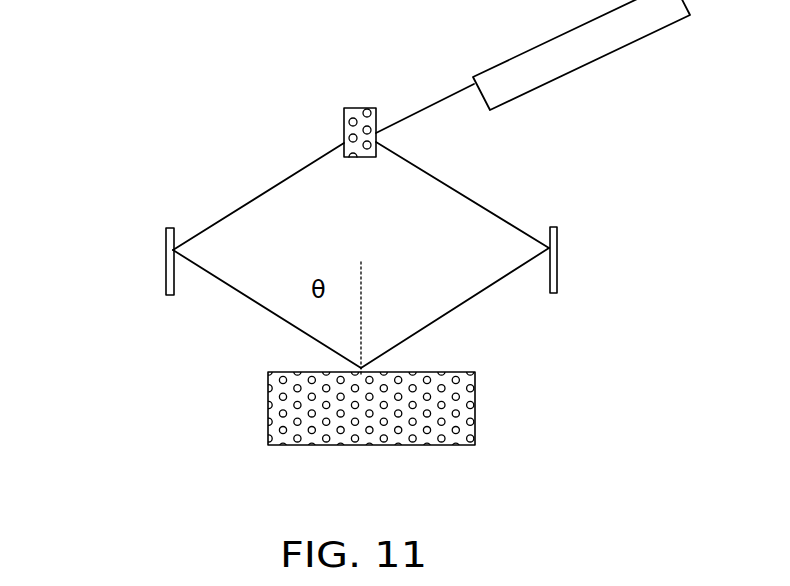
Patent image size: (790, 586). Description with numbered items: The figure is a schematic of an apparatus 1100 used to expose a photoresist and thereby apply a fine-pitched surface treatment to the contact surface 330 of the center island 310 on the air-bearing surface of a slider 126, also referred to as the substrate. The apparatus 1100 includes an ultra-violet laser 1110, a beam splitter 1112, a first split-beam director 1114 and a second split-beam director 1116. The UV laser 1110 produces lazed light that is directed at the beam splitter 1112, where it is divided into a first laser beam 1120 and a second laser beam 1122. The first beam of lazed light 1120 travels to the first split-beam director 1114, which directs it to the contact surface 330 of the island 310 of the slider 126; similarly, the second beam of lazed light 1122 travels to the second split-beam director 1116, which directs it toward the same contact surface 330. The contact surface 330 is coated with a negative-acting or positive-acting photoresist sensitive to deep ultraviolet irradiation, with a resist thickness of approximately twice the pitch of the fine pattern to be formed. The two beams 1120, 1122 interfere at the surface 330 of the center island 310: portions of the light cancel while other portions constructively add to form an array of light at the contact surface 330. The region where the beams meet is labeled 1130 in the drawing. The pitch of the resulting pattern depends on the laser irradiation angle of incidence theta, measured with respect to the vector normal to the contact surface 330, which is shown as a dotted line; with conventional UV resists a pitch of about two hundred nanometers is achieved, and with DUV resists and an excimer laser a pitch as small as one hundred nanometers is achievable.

The apparatus 1100 is at (177, 77).
The ultra-violet laser 1110 is at (645, 38).
The beam splitter 1112 is at (350, 107).
The first split-beam director 1114 is at (165, 260).
The second split-beam director 1116 is at (557, 258).
The first laser beam 1120 is at (273, 180).
The second laser beam 1122 is at (453, 185).
The interference region on sample surface 1130 is at (366, 368).
The slider 126 is at (293, 430).
The center island 310 is at (345, 437).
The contact surface 330 is at (443, 447).